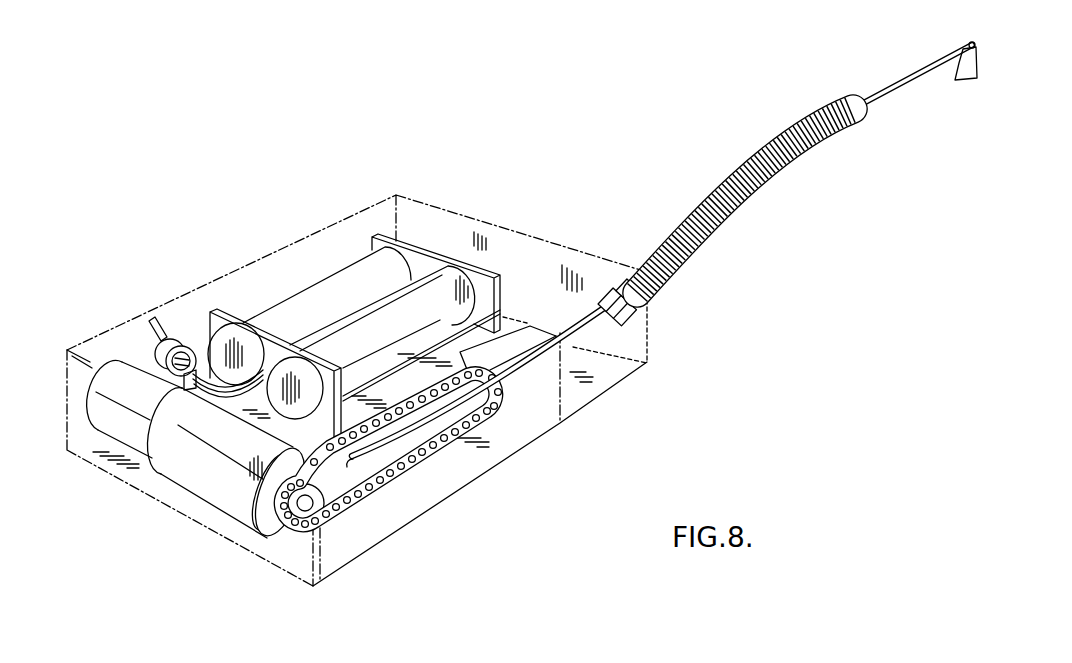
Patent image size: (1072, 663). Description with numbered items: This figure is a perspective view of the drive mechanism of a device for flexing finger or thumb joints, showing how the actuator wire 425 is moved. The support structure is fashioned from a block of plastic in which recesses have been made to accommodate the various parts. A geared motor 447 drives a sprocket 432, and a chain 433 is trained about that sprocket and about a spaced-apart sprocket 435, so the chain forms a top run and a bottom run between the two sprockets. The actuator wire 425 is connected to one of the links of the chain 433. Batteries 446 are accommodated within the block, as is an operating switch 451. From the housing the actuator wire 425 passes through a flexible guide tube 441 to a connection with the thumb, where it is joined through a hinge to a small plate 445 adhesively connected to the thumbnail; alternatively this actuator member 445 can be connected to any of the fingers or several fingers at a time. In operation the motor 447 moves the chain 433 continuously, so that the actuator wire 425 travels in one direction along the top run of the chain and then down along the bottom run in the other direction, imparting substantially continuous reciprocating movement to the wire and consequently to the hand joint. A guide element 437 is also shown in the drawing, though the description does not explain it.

The actuator wire 425 is at (647, 361).
The sprocket 432 is at (306, 522).
The chain 433 is at (393, 472).
The spaced-apart sprocket 435 is at (483, 405).
The guide rail 437 is at (410, 463).
The flexible guide tube 441 is at (795, 152).
The small plate 445 is at (977, 72).
The batteries 446 is at (347, 293).
The geared motor 447 is at (205, 470).
The operating switch 451 is at (140, 347).